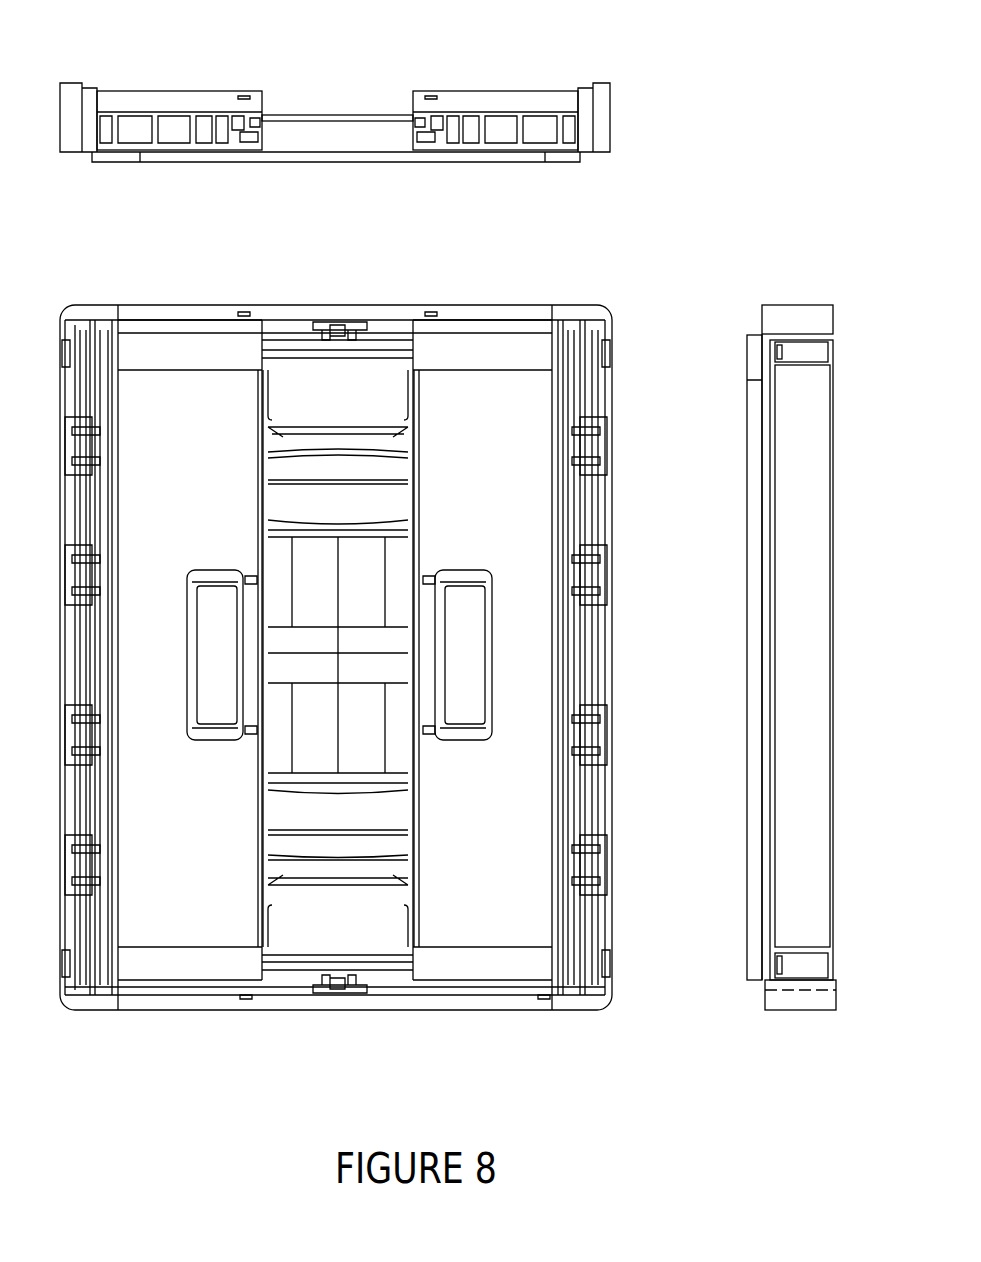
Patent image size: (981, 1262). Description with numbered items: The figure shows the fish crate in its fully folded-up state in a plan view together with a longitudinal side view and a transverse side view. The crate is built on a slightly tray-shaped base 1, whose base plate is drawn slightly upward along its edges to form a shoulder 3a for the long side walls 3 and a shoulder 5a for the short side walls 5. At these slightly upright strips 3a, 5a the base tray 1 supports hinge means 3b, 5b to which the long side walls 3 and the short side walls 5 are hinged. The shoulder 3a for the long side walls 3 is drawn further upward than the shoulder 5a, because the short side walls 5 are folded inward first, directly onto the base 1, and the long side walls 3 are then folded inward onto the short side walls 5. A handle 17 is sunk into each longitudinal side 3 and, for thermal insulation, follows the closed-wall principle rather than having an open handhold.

The base 1 is at (300, 585).
The long side wall 3 is at (178, 98).
The shoulder 3a is at (605, 392).
The hinge 3b is at (600, 440).
The short side wall 5 is at (491, 651).
The shoulder 5a is at (340, 133).
The hinge 5b is at (333, 322).
The handle 17 is at (205, 665).